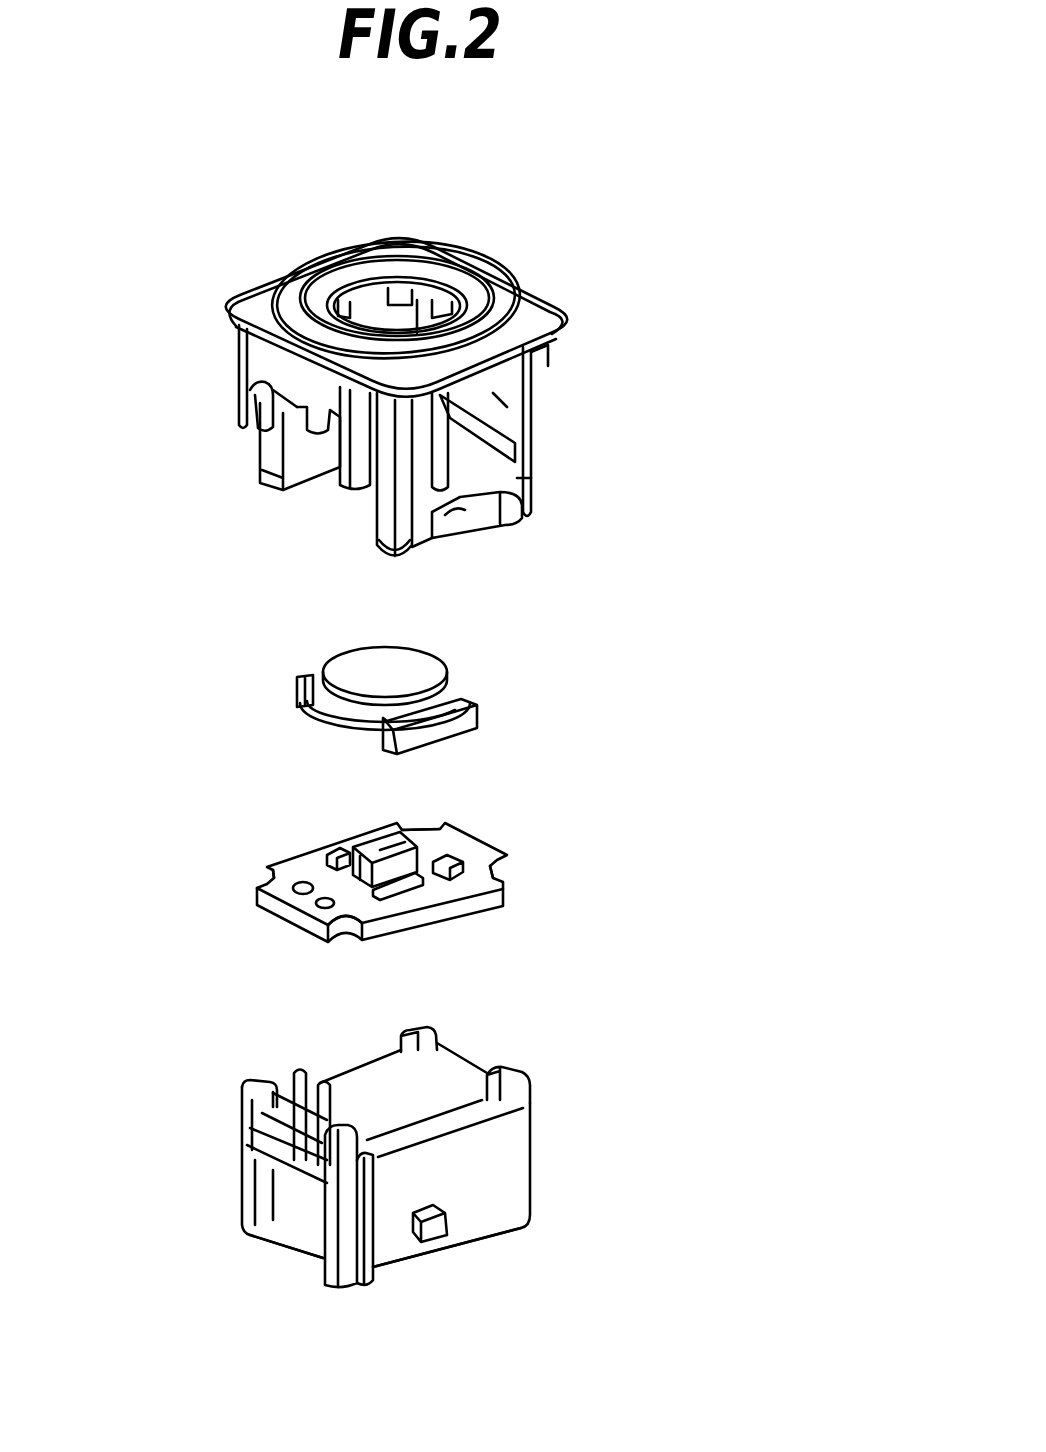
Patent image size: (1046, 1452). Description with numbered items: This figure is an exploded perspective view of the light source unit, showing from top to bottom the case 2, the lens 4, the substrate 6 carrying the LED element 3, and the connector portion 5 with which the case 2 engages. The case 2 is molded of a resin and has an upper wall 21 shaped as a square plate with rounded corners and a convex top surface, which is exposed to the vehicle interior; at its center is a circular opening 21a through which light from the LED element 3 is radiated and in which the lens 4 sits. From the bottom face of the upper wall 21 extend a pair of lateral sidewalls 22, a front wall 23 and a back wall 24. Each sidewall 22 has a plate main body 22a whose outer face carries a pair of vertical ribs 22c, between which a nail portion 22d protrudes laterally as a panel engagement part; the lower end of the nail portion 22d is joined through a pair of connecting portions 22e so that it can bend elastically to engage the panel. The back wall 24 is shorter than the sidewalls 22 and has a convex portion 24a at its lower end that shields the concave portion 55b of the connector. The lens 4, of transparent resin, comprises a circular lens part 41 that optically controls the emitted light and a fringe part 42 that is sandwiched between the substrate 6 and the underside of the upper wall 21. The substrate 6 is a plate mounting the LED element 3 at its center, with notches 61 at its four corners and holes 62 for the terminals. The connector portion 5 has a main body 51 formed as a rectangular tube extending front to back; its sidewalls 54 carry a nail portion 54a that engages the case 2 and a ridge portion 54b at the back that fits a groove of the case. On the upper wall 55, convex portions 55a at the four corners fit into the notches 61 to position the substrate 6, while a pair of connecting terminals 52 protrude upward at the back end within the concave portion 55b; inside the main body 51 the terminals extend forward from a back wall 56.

The case 2 is at (578, 273).
The upper wall 21 is at (297, 277).
The opening 21a is at (357, 297).
The sidewalls 22 is at (265, 478).
The plate main body 22a is at (466, 523).
The ribs 22c is at (420, 440).
The nail portion 22d is at (513, 407).
The connecting portions 22e is at (397, 533).
The front wall 23 is at (553, 360).
The back wall 24 is at (257, 380).
The convex portion 24a is at (287, 413).
The LED element 3 is at (377, 843).
The lens 4 is at (484, 665).
The lens part 41 is at (343, 667).
The fringe part 42 is at (297, 690).
The substrate 6 is at (524, 845).
The notches 61 is at (430, 823).
The holes 62 is at (322, 907).
The connector portion 5 is at (569, 1115).
The main body 51 is at (500, 1210).
The connecting terminals 52 is at (300, 1070).
The sidewalls 54 is at (393, 1247).
The nail portion 54a is at (433, 1225).
The ridge portion 54b is at (320, 1257).
The upper wall 55 is at (367, 1077).
The convex portions 55a is at (253, 1083).
The concave portion 55b is at (270, 1150).
The back wall 56 is at (283, 1203).